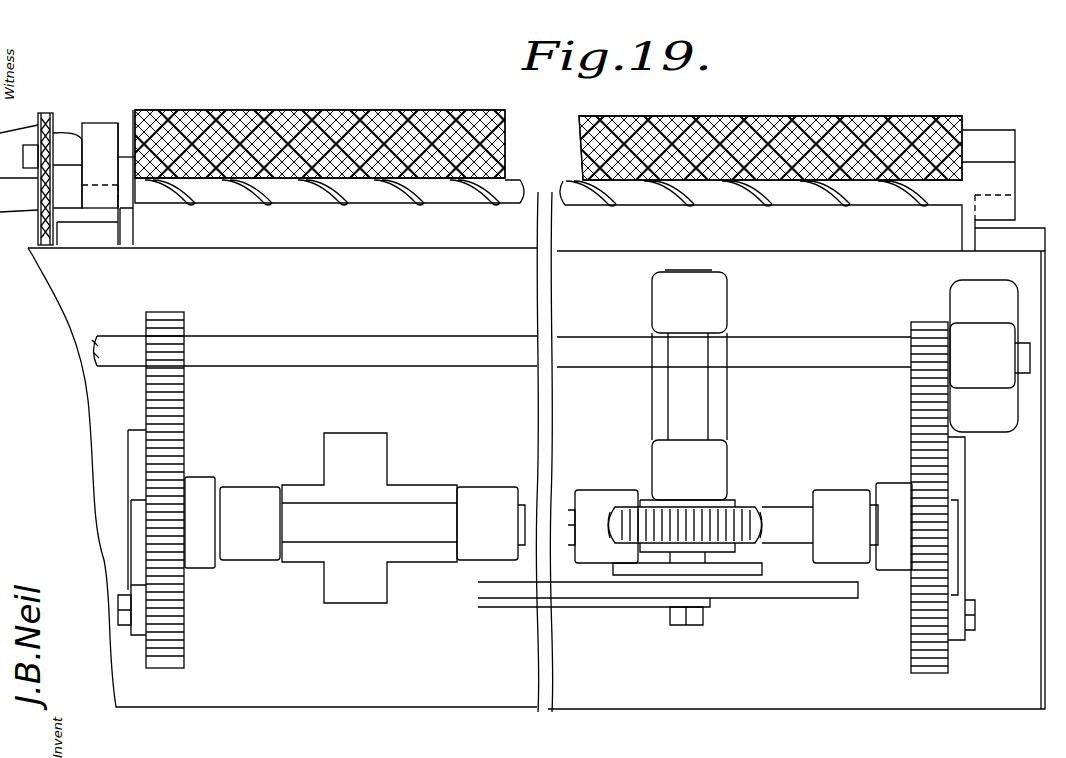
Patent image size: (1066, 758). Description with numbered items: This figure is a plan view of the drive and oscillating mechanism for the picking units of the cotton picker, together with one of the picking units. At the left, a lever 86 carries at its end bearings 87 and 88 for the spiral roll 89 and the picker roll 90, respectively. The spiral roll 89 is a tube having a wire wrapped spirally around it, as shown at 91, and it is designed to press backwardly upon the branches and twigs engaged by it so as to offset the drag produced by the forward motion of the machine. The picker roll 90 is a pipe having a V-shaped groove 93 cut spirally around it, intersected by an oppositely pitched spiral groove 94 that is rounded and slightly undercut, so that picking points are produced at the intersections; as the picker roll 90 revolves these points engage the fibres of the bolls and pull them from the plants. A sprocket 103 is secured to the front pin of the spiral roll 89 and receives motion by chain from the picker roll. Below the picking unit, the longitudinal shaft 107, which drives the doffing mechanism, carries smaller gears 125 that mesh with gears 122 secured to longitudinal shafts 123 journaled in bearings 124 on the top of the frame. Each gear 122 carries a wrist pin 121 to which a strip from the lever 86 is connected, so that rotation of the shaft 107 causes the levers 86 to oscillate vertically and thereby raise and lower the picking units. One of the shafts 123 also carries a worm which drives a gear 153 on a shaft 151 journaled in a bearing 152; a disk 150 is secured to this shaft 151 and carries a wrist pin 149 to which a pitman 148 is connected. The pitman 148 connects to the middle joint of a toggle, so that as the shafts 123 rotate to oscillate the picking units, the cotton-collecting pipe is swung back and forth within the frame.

The lever 86 is at (132, 231).
The bearing 87 is at (106, 163).
The bearing 88 is at (90, 130).
The spiral roll 89 is at (353, 197).
The picker roll 90 is at (340, 110).
The spirally wrapped wire 91 is at (296, 196).
The V-shaped spiral groove 93 is at (243, 110).
The oppositely pitched spiral groove 94 is at (290, 113).
The sprocket 103 is at (40, 210).
The longitudinal shaft 107 is at (382, 350).
The wrist pin 121 is at (140, 573).
The gear 122 is at (178, 450).
The longitudinal shaft 123 is at (410, 515).
The bearing 124 is at (483, 548).
The smaller gear 125 is at (176, 337).
The pitman 148 is at (595, 605).
The wrist pin 149 is at (680, 623).
The disk 150 is at (757, 602).
The shaft 151 is at (693, 402).
The bearing 152 is at (720, 308).
The gear 153 is at (752, 512).